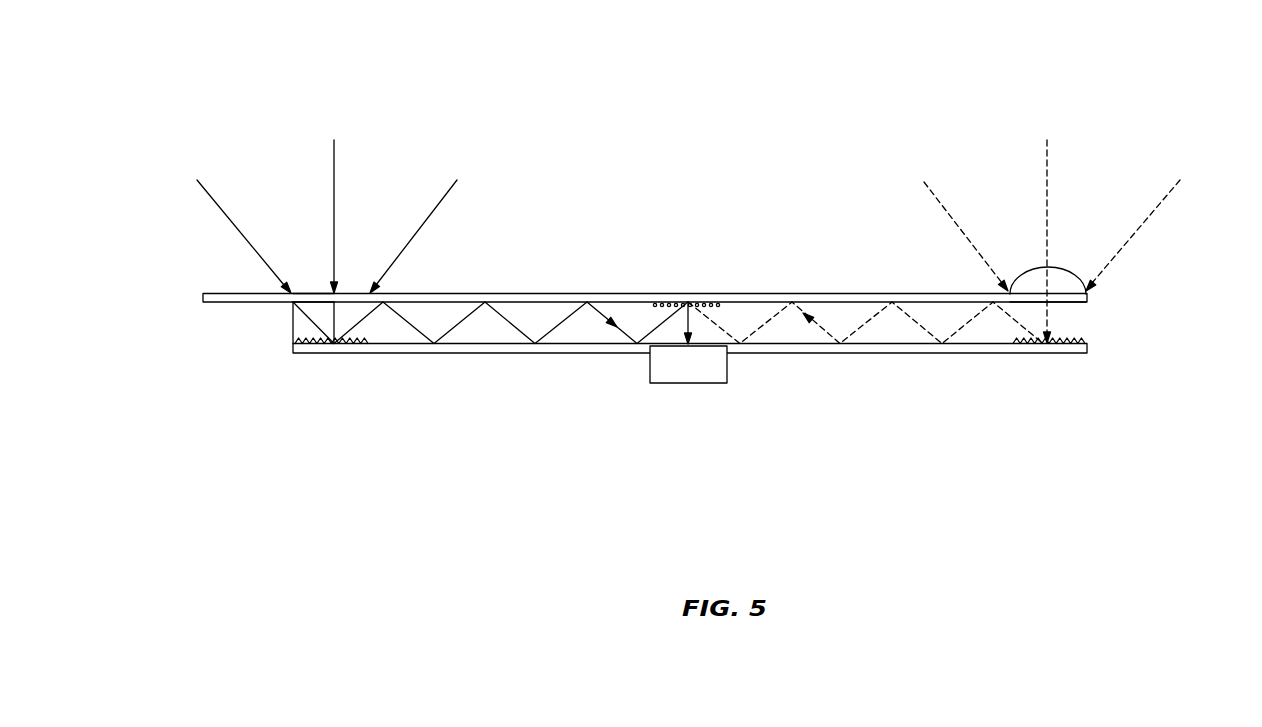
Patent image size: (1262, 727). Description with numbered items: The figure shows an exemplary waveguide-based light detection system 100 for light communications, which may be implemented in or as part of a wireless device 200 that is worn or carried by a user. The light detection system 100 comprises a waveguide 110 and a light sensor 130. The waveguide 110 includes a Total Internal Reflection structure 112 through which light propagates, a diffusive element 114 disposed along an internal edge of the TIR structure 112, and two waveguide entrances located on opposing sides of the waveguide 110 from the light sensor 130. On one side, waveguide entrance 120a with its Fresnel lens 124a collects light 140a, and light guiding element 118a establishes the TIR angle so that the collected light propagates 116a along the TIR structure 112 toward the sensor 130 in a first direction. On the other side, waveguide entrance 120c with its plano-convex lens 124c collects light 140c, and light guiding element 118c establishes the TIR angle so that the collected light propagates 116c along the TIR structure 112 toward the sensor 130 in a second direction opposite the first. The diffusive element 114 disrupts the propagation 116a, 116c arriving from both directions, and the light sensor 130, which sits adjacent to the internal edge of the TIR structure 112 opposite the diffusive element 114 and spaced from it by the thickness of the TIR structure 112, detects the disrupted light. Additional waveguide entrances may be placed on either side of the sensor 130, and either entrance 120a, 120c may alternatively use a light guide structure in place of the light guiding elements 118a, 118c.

The light detection system 100 is at (845, 54).
The waveguide 110 is at (883, 295).
The Total Internal Reflection (TIR) structure 112 is at (482, 333).
The diffusive element 114 is at (680, 300).
The propagation of collected light in a first direction 116a is at (510, 320).
The propagation of collected light in a second direction 116c is at (771, 316).
The light guiding element 118a is at (355, 343).
The light guiding element 118c is at (1063, 345).
The waveguide entrance 120a is at (318, 312).
The waveguide entrance 120c is at (1073, 310).
The Fresnel lens 124a is at (294, 307).
The plano-convex lens 124c is at (1068, 291).
The light sensor 130 is at (704, 375).
The light 140a is at (412, 152).
The light 140c is at (1118, 147).
The wireless device 200 is at (575, 462).